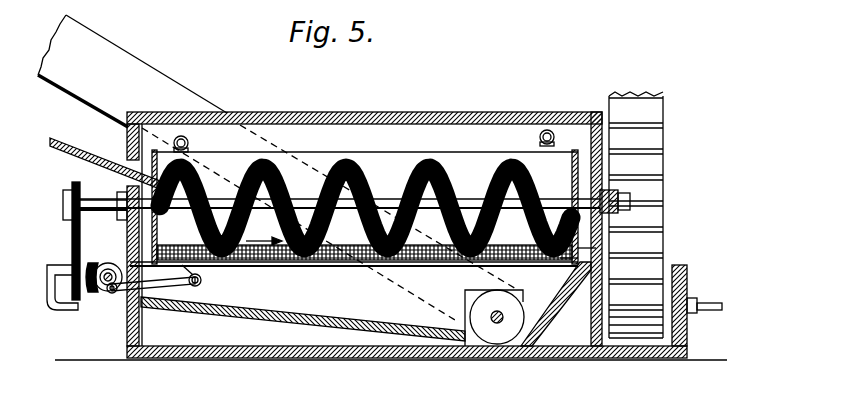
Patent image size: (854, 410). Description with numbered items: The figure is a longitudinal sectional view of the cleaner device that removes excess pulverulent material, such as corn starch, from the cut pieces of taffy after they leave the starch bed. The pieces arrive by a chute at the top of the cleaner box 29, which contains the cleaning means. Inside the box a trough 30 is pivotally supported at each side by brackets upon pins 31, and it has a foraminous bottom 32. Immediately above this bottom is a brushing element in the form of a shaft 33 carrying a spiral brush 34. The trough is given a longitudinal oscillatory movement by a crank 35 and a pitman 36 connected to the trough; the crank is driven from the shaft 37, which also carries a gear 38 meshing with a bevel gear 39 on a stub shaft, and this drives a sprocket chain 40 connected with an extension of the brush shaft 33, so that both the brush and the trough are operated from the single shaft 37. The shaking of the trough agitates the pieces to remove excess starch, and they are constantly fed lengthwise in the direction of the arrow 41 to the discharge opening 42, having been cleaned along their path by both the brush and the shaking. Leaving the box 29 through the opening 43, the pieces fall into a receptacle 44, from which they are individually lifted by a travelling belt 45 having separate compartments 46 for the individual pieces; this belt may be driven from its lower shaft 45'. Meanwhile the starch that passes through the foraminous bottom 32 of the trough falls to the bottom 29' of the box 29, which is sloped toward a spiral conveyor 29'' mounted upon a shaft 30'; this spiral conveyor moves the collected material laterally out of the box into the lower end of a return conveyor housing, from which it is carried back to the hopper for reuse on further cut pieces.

The cleaner box 29 is at (382, 187).
The bottom of the box 29' is at (303, 341).
The spiral conveyor 29'' is at (540, 329).
The trough 30 is at (359, 174).
The shaft 30' is at (486, 338).
The pins 31 is at (547, 130).
The foraminous bottom 32 is at (338, 262).
The shaft 33 is at (510, 160).
The spiral brush 34 is at (272, 180).
The crank 35 is at (108, 292).
The pitman 36 is at (173, 288).
The shaft 37 is at (94, 292).
The gear 38 is at (110, 263).
The bevel gear 39 is at (70, 285).
The sprocket chain 40 is at (70, 244).
The arrow 41 is at (264, 233).
The discharge opening 42 is at (575, 243).
The opening 43 is at (596, 248).
The receptacle 44 is at (674, 287).
The travelling belt 45 is at (655, 217).
The lower shaft 45' is at (708, 319).
The compartments 46 is at (655, 116).